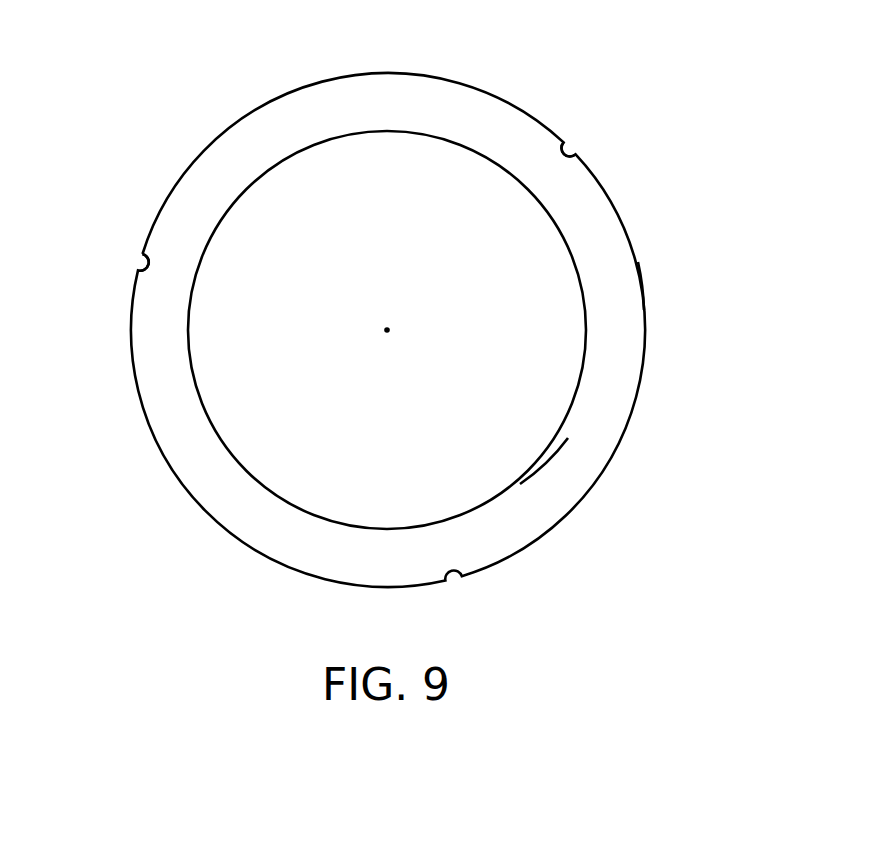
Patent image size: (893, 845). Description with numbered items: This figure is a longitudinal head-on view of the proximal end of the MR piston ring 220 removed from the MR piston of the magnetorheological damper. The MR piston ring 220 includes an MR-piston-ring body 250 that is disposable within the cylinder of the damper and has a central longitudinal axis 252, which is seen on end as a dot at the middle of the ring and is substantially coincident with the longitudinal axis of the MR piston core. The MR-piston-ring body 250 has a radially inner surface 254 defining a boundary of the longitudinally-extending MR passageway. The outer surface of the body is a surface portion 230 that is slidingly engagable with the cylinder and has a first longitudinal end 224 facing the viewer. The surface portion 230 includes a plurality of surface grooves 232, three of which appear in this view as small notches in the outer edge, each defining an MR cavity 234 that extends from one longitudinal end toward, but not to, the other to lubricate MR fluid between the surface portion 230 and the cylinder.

The MR piston ring 220 is at (684, 148).
The MR-piston-ring body 250 is at (338, 77).
The surface portion 230 is at (648, 287).
The surface groove 232 is at (570, 150).
The MR cavity 234 is at (141, 263).
The first longitudinal end 224 is at (589, 331).
The radially inner surface 254 is at (543, 453).
The central longitudinal axis 252 is at (385, 331).